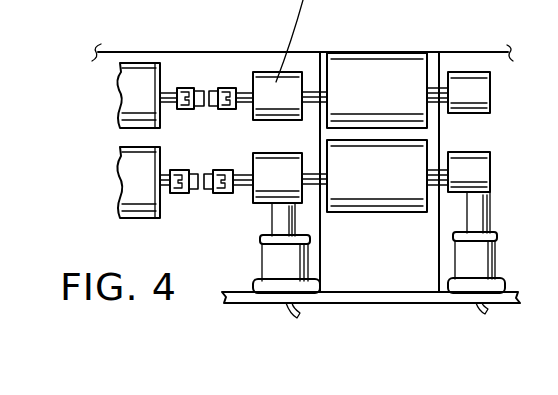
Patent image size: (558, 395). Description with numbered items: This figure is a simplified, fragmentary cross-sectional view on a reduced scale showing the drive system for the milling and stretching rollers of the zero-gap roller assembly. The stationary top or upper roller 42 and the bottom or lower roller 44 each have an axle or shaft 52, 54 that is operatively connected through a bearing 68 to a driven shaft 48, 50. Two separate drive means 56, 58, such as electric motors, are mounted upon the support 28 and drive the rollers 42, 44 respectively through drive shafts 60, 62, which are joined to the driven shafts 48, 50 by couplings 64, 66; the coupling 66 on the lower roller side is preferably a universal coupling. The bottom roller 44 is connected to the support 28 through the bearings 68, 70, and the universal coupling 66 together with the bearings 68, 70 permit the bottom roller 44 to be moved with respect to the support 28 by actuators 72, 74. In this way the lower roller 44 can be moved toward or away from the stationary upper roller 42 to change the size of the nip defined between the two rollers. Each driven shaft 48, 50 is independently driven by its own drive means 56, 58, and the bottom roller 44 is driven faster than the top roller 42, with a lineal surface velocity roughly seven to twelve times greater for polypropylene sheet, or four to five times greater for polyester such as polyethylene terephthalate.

The support 28 is at (297, 53).
The top roller 42 is at (387, 94).
The bottom roller 44 is at (388, 180).
The driven shaft 48 is at (245, 90).
The driven shaft 50 is at (245, 187).
The shaft 52 is at (312, 88).
The shaft 54 is at (312, 172).
The drive means 56 is at (138, 72).
The drive means 58 is at (137, 217).
The drive shaft 60 is at (201, 90).
The drive shaft 62 is at (198, 194).
The coupling 64 is at (226, 87).
The universal coupling 66 is at (210, 194).
The bearing 68 is at (300, 199).
The bearing 70 is at (482, 173).
The actuator 72 is at (310, 263).
The actuator 74 is at (490, 255).